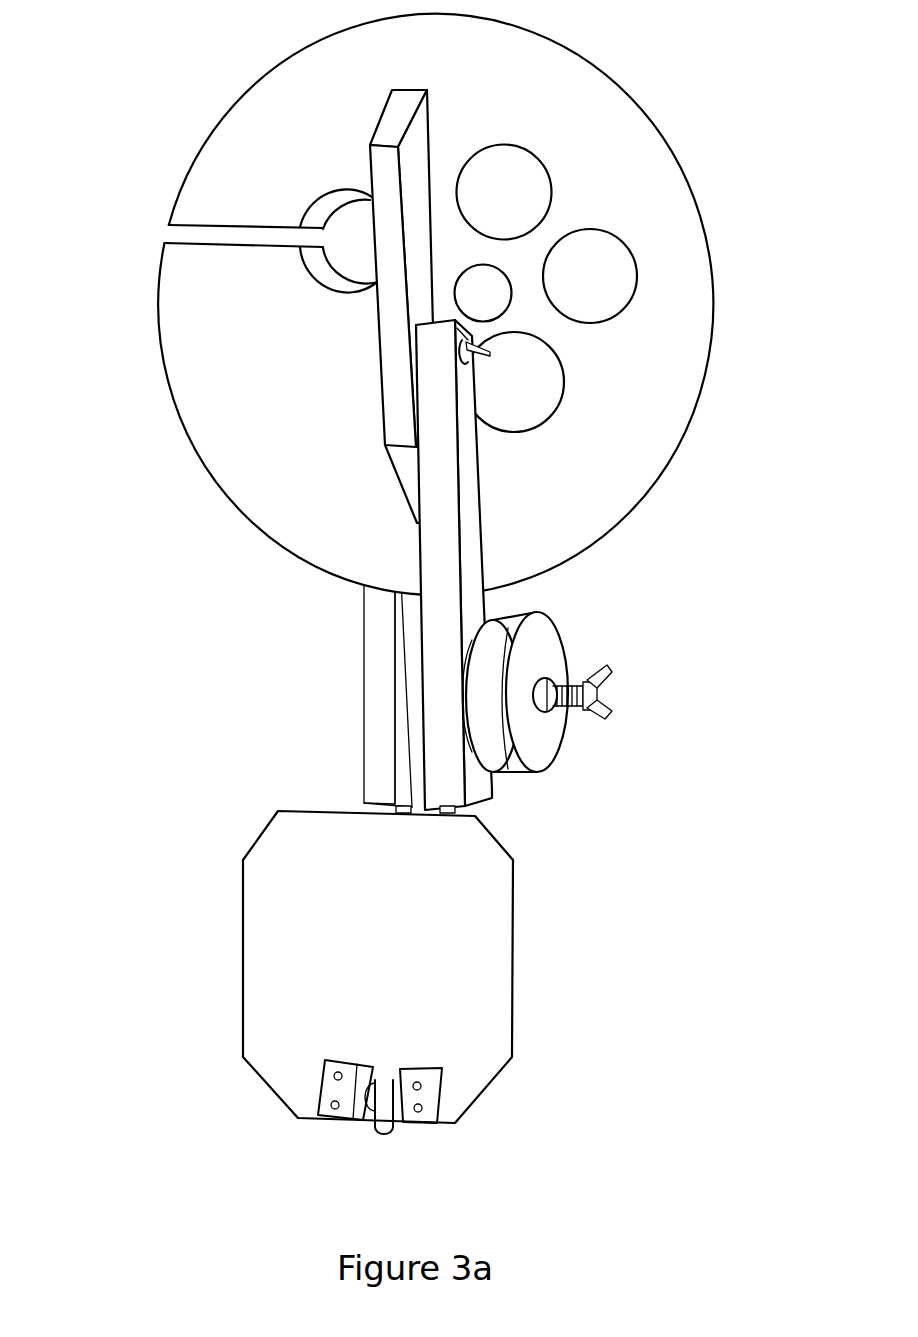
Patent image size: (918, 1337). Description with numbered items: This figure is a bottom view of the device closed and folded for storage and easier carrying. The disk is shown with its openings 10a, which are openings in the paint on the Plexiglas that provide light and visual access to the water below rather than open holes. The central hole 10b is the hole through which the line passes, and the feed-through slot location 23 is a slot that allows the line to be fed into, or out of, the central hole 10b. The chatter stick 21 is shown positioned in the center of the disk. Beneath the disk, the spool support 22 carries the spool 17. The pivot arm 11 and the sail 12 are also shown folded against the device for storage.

The openings 10a is at (596, 257).
The central hole 10b is at (332, 262).
The pivot arm 11 is at (363, 710).
The sail 12 is at (267, 922).
The spool 17 is at (578, 738).
The chatter stick 21 is at (376, 379).
The spool support 22 is at (478, 462).
The feed-through slot location 23 is at (187, 237).